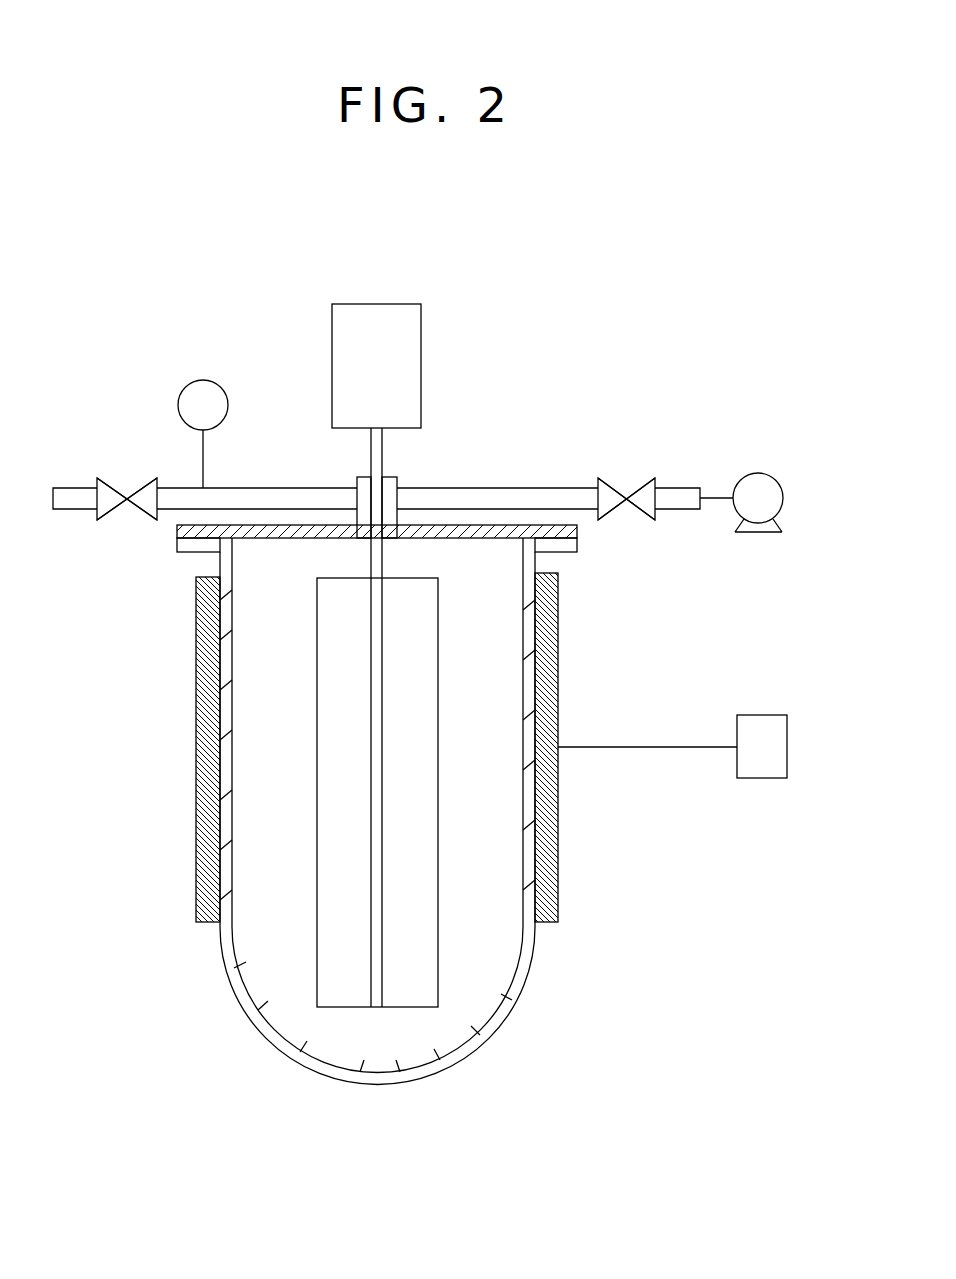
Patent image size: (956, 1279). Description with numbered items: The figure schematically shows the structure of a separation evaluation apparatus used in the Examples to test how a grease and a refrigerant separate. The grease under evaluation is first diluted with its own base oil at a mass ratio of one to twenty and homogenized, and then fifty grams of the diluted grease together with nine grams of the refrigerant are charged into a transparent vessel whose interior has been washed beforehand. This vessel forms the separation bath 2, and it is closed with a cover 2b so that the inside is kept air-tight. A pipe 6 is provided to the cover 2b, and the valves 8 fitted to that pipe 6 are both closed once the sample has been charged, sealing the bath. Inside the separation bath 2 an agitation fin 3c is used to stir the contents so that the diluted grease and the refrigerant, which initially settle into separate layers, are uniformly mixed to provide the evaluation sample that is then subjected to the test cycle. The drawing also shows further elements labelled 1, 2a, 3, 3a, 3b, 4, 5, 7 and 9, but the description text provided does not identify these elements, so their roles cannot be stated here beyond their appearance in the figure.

The treatment apparatus 1 is at (583, 332).
The separation bath 2 is at (84, 540).
The vessel body 2a is at (222, 562).
The cover 2b is at (210, 521).
The stirring device 3 is at (342, 456).
The motor 3a is at (408, 353).
The rotating shaft 3b is at (372, 887).
The agitation fin 3c is at (430, 983).
The heater 4 is at (196, 757).
The controller 5 is at (762, 718).
The pipe 6 is at (493, 493).
The pump 7 is at (740, 480).
The valves 8 is at (112, 483).
The pressure gauge 9 is at (195, 382).